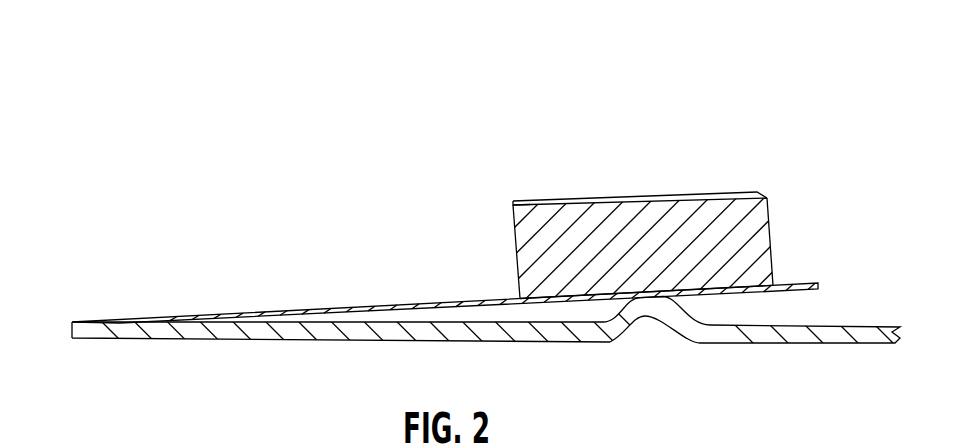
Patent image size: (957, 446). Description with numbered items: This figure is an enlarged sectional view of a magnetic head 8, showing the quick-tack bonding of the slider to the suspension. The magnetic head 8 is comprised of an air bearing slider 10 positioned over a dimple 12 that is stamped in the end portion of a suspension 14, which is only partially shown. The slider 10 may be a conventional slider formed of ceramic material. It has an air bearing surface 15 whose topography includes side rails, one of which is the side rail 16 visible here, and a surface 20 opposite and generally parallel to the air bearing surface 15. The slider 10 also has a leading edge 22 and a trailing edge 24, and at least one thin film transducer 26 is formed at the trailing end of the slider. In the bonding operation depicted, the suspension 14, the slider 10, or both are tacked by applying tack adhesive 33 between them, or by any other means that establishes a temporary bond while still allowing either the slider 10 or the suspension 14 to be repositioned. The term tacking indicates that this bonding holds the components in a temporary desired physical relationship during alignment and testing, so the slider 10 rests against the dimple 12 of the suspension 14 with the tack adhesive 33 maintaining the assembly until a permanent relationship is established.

The magnetic head 8 is at (466, 208).
The air bearing slider 10 is at (591, 202).
The dimple 12 is at (636, 318).
The suspension 14 is at (499, 338).
The air bearing surface 15 is at (576, 203).
The side rail 16 is at (690, 195).
The surface 20 is at (572, 304).
The leading edge 22 is at (765, 227).
The trailing edge 24 is at (520, 248).
The thin film transducer 26 is at (511, 210).
The tack adhesive 33 is at (768, 284).